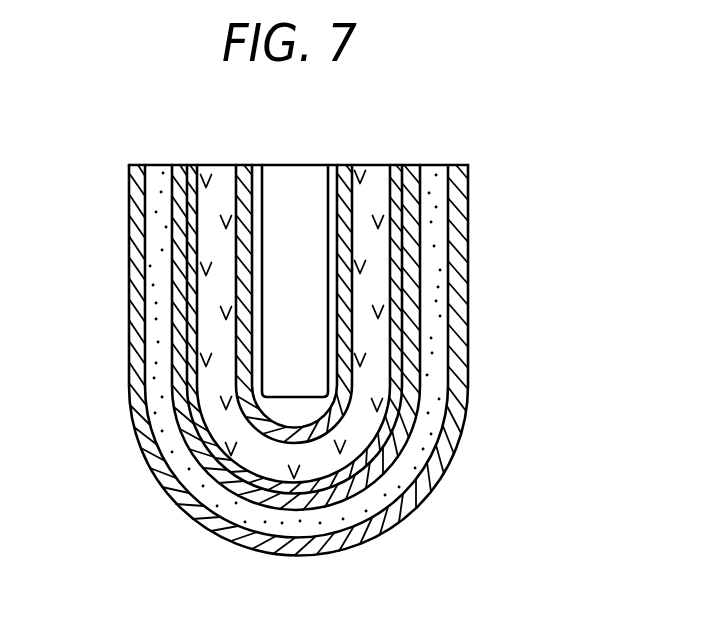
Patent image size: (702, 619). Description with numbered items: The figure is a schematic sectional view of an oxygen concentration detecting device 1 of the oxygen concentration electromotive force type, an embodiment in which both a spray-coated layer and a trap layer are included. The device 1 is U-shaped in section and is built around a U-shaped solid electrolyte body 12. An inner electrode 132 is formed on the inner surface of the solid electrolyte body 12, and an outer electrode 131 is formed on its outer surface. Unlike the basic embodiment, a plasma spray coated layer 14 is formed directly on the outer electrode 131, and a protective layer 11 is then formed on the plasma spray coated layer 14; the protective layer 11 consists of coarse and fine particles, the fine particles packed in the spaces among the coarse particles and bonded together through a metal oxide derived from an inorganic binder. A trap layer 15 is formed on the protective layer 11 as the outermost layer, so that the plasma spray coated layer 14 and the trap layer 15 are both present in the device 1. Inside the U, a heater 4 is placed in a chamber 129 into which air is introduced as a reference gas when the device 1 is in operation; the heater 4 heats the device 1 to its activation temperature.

The oxygen concentration detecting device 1 is at (278, 164).
The heater 4 is at (307, 186).
The protective layer 11 is at (432, 358).
The solid electrolyte body 12 is at (367, 244).
The plasma spray coated layer 14 is at (408, 323).
The trap layer 15 is at (448, 421).
The chamber 129 is at (284, 414).
The outer electrode 131 is at (398, 297).
The inner electrode 132 is at (342, 206).